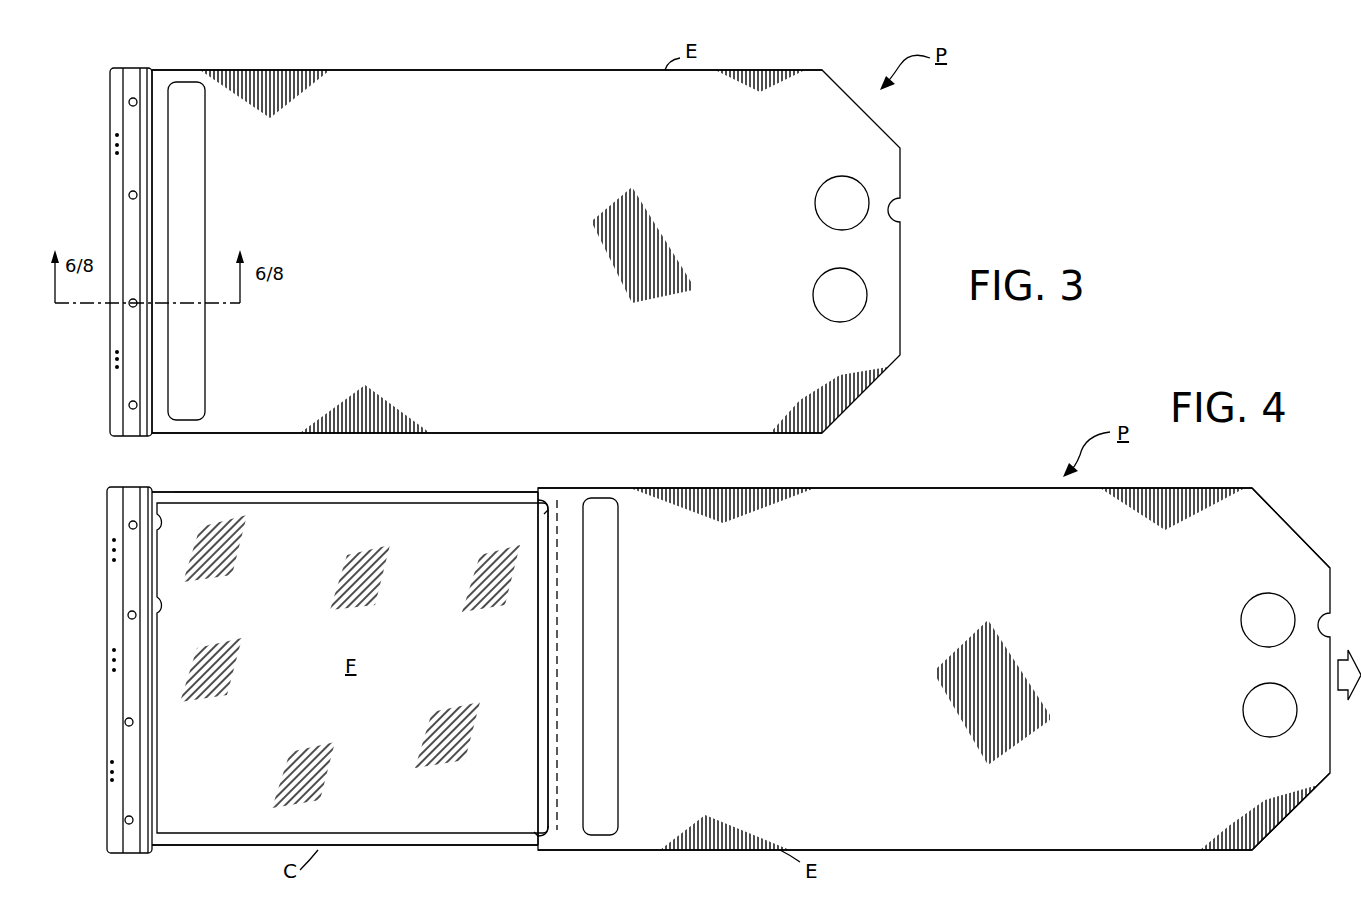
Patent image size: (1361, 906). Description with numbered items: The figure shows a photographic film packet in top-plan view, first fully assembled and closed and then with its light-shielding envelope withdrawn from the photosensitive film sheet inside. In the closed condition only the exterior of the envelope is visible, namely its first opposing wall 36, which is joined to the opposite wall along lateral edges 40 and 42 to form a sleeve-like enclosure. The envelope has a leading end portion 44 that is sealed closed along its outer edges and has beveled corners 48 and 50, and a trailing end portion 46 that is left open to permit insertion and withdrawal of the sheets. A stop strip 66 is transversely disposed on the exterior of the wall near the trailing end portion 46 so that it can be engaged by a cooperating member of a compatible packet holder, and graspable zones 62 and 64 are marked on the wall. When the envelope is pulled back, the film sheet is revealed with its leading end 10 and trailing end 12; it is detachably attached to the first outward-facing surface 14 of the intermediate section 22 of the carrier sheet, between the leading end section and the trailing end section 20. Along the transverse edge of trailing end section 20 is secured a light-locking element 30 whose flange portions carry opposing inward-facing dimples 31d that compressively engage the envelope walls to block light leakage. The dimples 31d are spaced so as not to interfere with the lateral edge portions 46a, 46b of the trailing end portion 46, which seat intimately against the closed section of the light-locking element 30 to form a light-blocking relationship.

In FIG. 4, the leading end 10 is at (557, 757).
In FIG. 4, the trailing end 12 is at (155, 770).
In FIG. 4, the first outward-facing surface 14 is at (437, 840).
In FIG. 4, the trailing end section 20 is at (165, 488).
In FIG. 4, the intermediate section 22 is at (358, 490).
In FIG. 3, the light-locking element 30 is at (110, 228).
In FIG. 4, the light-locking element 30 is at (110, 638).
In FIG. 3, the dimples 31d is at (137, 194).
In FIG. 4, the dimples 31d is at (129, 612).
In FIG. 3, the first opposing wall 36 is at (526, 251).
In FIG. 4, the first opposing wall 36 is at (931, 641).
In FIG. 3, the lateral edge 40 is at (512, 434).
In FIG. 4, the lateral edge 40 is at (1068, 852).
In FIG. 3, the lateral edge 42 is at (512, 70).
In FIG. 4, the lateral edge 42 is at (876, 488).
In FIG. 4, the leading end portion 44 is at (1222, 490).
In FIG. 4, the trailing end portion 46 is at (572, 490).
In FIG. 4, the lateral edge portion 46a is at (546, 510).
In FIG. 4, the lateral edge portion 46b is at (540, 836).
In FIG. 4, the beveled corner 48 is at (1305, 800).
In FIG. 4, the beveled corner 50 is at (1277, 527).
In FIG. 3, the graspable zone 62 is at (814, 295).
In FIG. 4, the graspable zone 62 is at (1246, 710).
In FIG. 3, the graspable zone 64 is at (816, 203).
In FIG. 4, the graspable zone 64 is at (1243, 620).
In FIG. 3, the stop strip 66 is at (186, 251).
In FIG. 4, the stop strip 66 is at (600, 666).